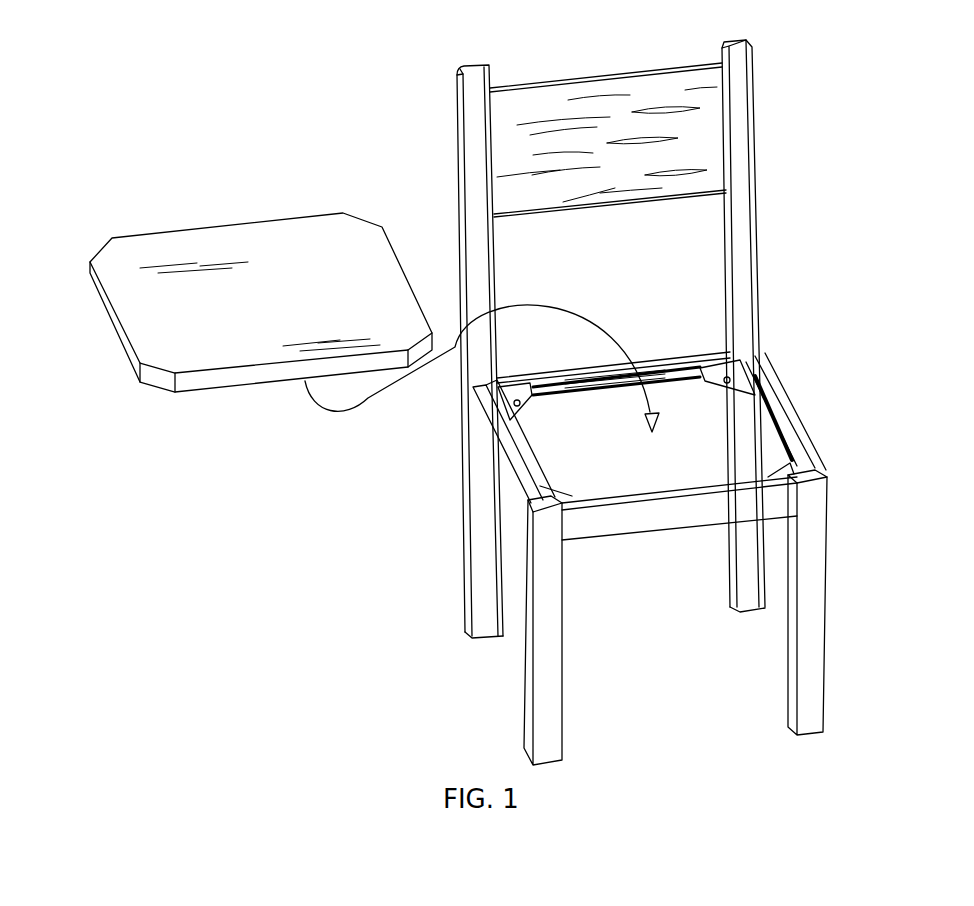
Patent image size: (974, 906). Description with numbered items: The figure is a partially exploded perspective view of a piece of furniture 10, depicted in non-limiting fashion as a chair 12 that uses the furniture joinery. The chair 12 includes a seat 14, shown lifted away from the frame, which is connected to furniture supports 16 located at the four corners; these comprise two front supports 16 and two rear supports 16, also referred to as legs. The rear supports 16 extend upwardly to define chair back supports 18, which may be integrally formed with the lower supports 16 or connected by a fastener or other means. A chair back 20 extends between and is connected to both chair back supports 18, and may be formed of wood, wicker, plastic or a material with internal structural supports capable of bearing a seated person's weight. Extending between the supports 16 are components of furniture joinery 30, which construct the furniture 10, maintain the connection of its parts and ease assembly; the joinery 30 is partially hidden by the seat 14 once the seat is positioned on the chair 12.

The piece of furniture 10 is at (867, 208).
The chair 12 is at (803, 347).
The seat 14 is at (270, 252).
The furniture supports 16 is at (457, 594).
The chair back supports 18 is at (468, 123).
The chair back 20 is at (545, 103).
The furniture joinery 30 is at (523, 415).